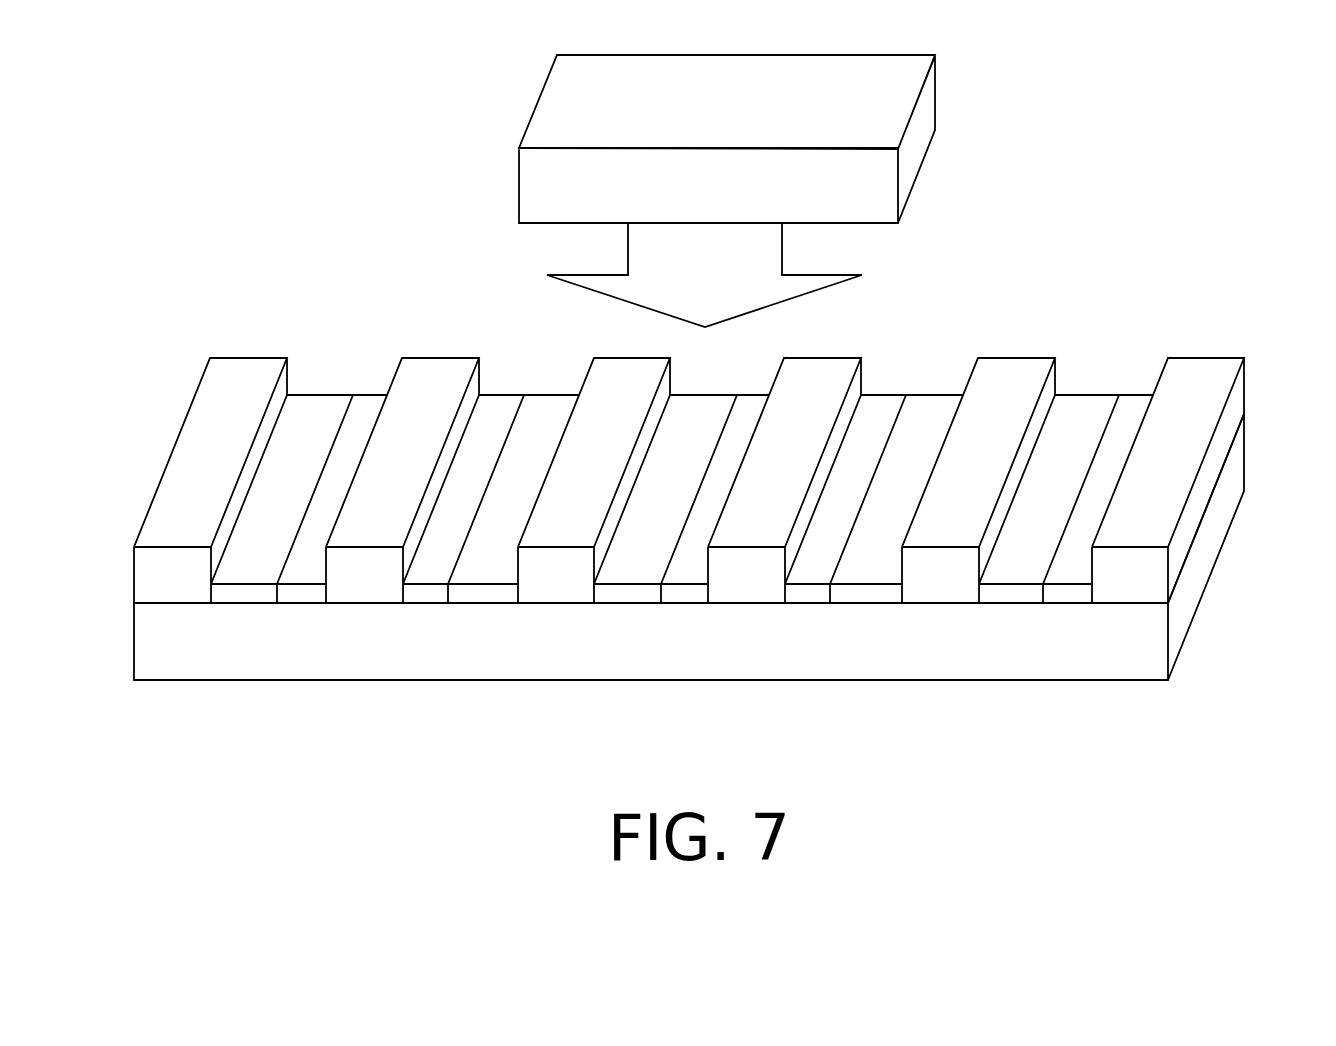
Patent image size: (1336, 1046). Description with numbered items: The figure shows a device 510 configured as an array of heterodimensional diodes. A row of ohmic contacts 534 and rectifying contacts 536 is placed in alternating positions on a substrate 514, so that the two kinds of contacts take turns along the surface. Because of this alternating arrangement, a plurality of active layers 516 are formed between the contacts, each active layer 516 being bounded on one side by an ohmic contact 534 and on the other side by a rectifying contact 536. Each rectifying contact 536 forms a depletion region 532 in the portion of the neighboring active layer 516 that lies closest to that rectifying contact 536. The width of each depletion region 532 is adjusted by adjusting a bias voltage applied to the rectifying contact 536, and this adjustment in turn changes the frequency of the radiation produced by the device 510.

The device 510 is at (214, 257).
The substrate 514 is at (619, 656).
The active layer 516 is at (242, 593).
The depletion region 532 is at (295, 597).
The ohmic contact 534 is at (165, 529).
The rectifying contact 536 is at (355, 529).